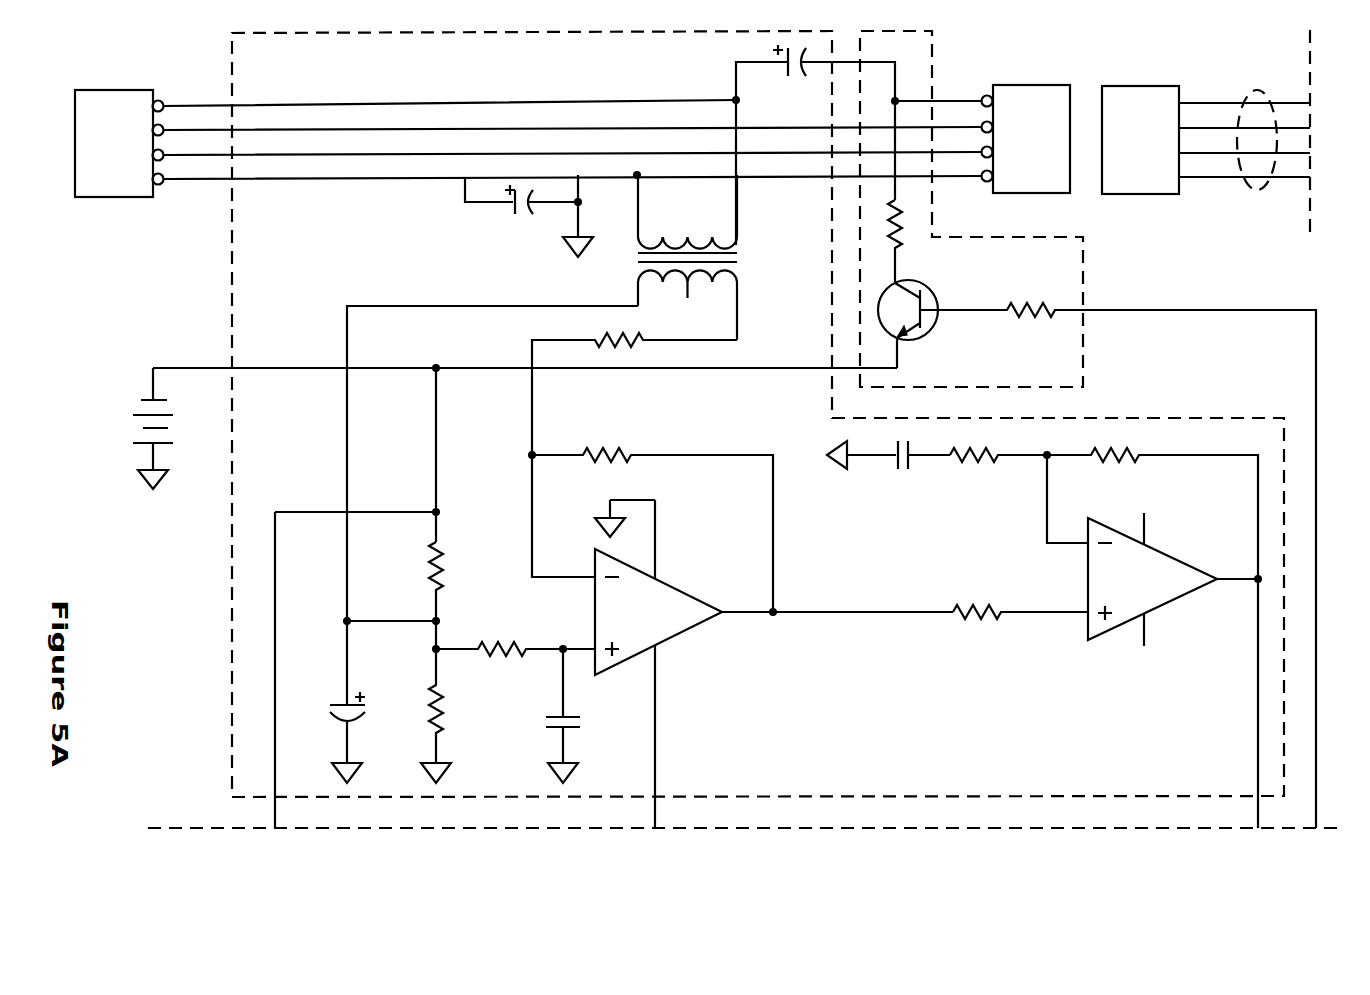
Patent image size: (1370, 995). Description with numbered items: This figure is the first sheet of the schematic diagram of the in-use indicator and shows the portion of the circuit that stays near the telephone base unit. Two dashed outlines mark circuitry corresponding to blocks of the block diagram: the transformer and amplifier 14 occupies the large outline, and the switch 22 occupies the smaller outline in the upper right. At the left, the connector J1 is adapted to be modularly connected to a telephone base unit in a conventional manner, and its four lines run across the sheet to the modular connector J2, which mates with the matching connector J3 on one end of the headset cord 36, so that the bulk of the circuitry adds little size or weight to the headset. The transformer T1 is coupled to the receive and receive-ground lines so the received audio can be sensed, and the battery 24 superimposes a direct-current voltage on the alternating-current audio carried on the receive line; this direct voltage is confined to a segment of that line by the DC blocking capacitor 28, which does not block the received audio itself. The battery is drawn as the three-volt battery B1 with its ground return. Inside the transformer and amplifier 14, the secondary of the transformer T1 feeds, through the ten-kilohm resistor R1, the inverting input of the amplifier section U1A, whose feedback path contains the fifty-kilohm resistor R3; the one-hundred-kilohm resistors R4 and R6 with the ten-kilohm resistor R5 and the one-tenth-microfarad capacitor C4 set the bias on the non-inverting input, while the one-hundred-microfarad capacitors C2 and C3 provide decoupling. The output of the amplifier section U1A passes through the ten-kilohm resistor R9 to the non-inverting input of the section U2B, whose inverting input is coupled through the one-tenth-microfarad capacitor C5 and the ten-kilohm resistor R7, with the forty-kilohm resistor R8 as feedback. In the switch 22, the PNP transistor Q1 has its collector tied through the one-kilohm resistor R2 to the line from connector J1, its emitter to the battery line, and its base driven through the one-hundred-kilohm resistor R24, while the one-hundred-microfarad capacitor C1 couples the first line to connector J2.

The transformer and amplifier 14 is at (232, 657).
The switch 22 is at (932, 45).
The battery 24 is at (175, 420).
The DC blocking capacitor 28 is at (785, 73).
The headset cord 36 is at (1262, 88).
The connector J1 is at (112, 90).
The modular connector J2 is at (1043, 85).
The connector J3 is at (1138, 86).
The capacitor C1 is at (797, 78).
The capacitor C2 is at (515, 212).
The capacitor C3 is at (335, 708).
The capacitor C4 is at (545, 722).
The capacitor C5 is at (900, 470).
The transformer T1 is at (738, 262).
The resistor R1 is at (620, 335).
The resistor R2 is at (905, 213).
The resistor R3 is at (622, 455).
The resistor R4 is at (445, 575).
The resistor R5 is at (512, 648).
The resistor R6 is at (445, 715).
The resistor R7 is at (972, 465).
The resistor R8 is at (1112, 465).
The resistor R9 is at (985, 605).
The resistor R24 is at (1037, 303).
The PNP transistor Q1 is at (925, 333).
The battery B1 is at (135, 410).
The amplifier section of integrated circuit U1 U1A is at (680, 590).
The section of integrated circuit U2 U2B is at (1165, 553).